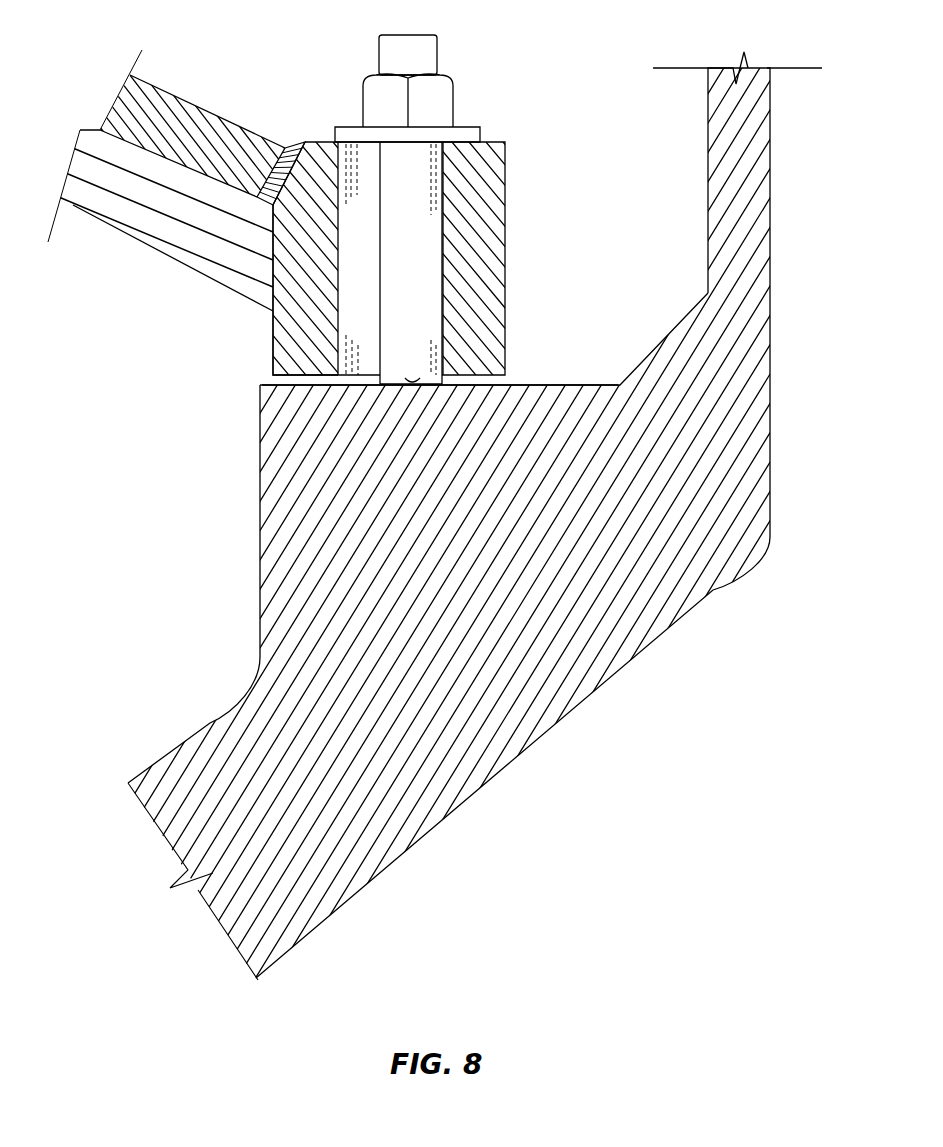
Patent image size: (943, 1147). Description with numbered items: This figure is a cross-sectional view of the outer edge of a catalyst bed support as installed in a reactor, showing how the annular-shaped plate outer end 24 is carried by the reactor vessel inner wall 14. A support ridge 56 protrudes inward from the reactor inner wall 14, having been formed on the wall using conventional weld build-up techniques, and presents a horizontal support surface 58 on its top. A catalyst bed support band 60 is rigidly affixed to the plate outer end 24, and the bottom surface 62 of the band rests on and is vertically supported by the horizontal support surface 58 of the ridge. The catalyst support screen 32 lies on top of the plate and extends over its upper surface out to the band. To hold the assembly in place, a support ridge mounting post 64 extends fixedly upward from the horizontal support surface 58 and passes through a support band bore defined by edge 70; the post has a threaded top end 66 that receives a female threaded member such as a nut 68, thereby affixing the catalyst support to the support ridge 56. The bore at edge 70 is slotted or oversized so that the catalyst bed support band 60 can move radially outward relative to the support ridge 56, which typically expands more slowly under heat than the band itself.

The reactor vessel inner wall 14 is at (707, 152).
The outer end 24 is at (187, 247).
The catalyst support screen 32 is at (183, 112).
The support ridge 56 is at (603, 667).
The horizontal support surface 58 is at (579, 384).
The catalyst bed support band 60 is at (494, 196).
The bottom surface 62 is at (300, 368).
The support ridge mounting post 64 is at (422, 302).
The threaded top end 66 is at (437, 57).
The nut 68 is at (453, 107).
The support band bore edge 70 is at (412, 385).